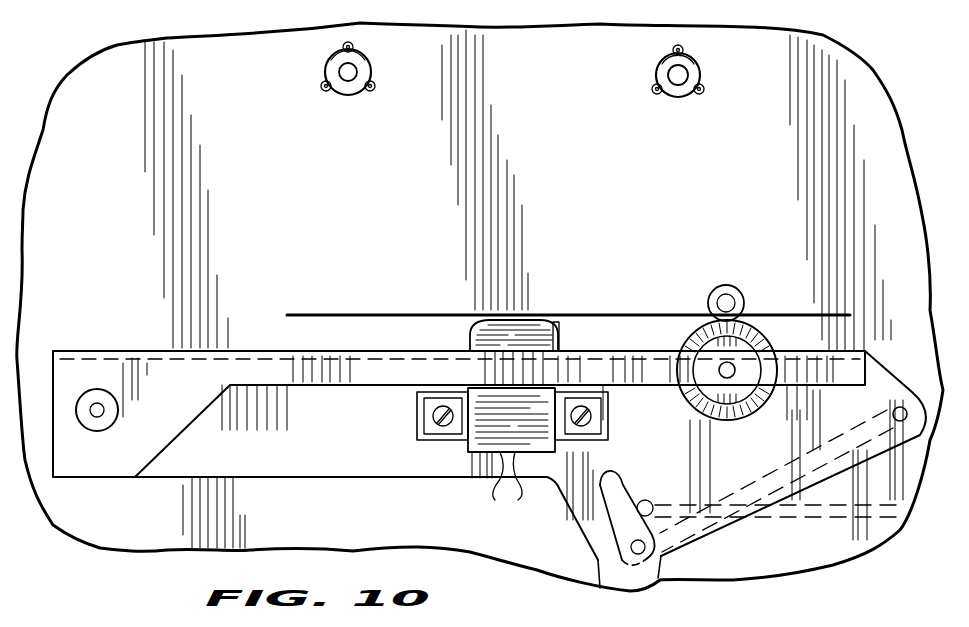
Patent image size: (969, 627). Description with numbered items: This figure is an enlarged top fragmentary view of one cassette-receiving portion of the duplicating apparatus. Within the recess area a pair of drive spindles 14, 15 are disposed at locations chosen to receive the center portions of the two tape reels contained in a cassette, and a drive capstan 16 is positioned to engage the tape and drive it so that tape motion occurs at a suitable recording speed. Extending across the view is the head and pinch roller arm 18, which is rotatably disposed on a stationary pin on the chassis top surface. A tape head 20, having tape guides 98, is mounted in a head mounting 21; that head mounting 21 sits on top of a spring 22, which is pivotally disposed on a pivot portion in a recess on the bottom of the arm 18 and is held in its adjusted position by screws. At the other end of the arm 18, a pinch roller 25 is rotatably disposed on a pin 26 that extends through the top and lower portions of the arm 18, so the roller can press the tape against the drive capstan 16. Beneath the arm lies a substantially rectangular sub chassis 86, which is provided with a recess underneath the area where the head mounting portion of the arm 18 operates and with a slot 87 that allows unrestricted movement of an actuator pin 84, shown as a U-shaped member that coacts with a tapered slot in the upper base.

The drive spindle 14 is at (325, 72).
The drive spindle 15 is at (658, 70).
The drive capstan 16 is at (725, 297).
The head and pinch roller arm 18 is at (196, 477).
The tape head 20 is at (470, 336).
The head mounting 21 is at (467, 452).
The spring 22 is at (373, 362).
The pinch roller 25 is at (742, 337).
The pin 26 is at (723, 364).
The actuator pin 84 is at (797, 455).
The sub chassis 86 is at (800, 543).
The slot 87 is at (606, 512).
The tape guides 98 is at (560, 328).